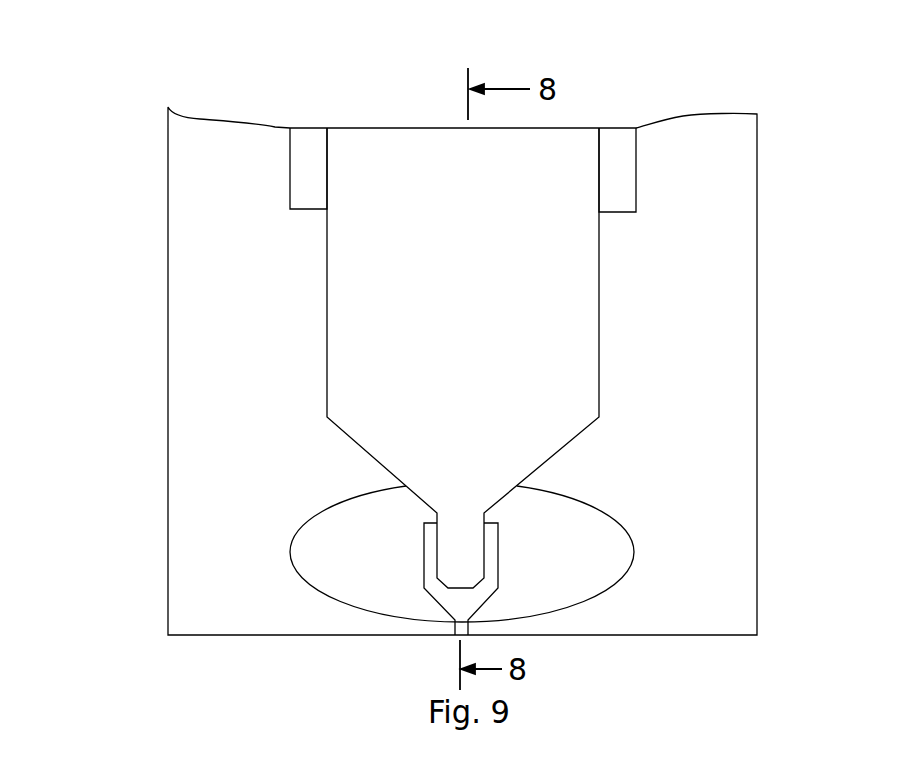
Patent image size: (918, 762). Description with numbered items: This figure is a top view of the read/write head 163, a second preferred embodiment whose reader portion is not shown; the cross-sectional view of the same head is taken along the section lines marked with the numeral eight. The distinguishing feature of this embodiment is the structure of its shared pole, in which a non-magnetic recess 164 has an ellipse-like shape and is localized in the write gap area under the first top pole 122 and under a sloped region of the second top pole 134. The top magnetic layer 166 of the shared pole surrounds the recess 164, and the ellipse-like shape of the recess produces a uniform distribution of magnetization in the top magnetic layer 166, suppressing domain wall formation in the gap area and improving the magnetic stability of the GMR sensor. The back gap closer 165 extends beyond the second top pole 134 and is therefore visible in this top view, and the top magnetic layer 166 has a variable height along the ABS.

The read/write head 163 is at (106, 74).
The top magnetic layer 166 is at (720, 585).
The back gap closer 165 is at (612, 155).
The second top pole 134 is at (362, 409).
The non-magnetic recess 164 is at (537, 546).
The first top pole 122 is at (443, 597).